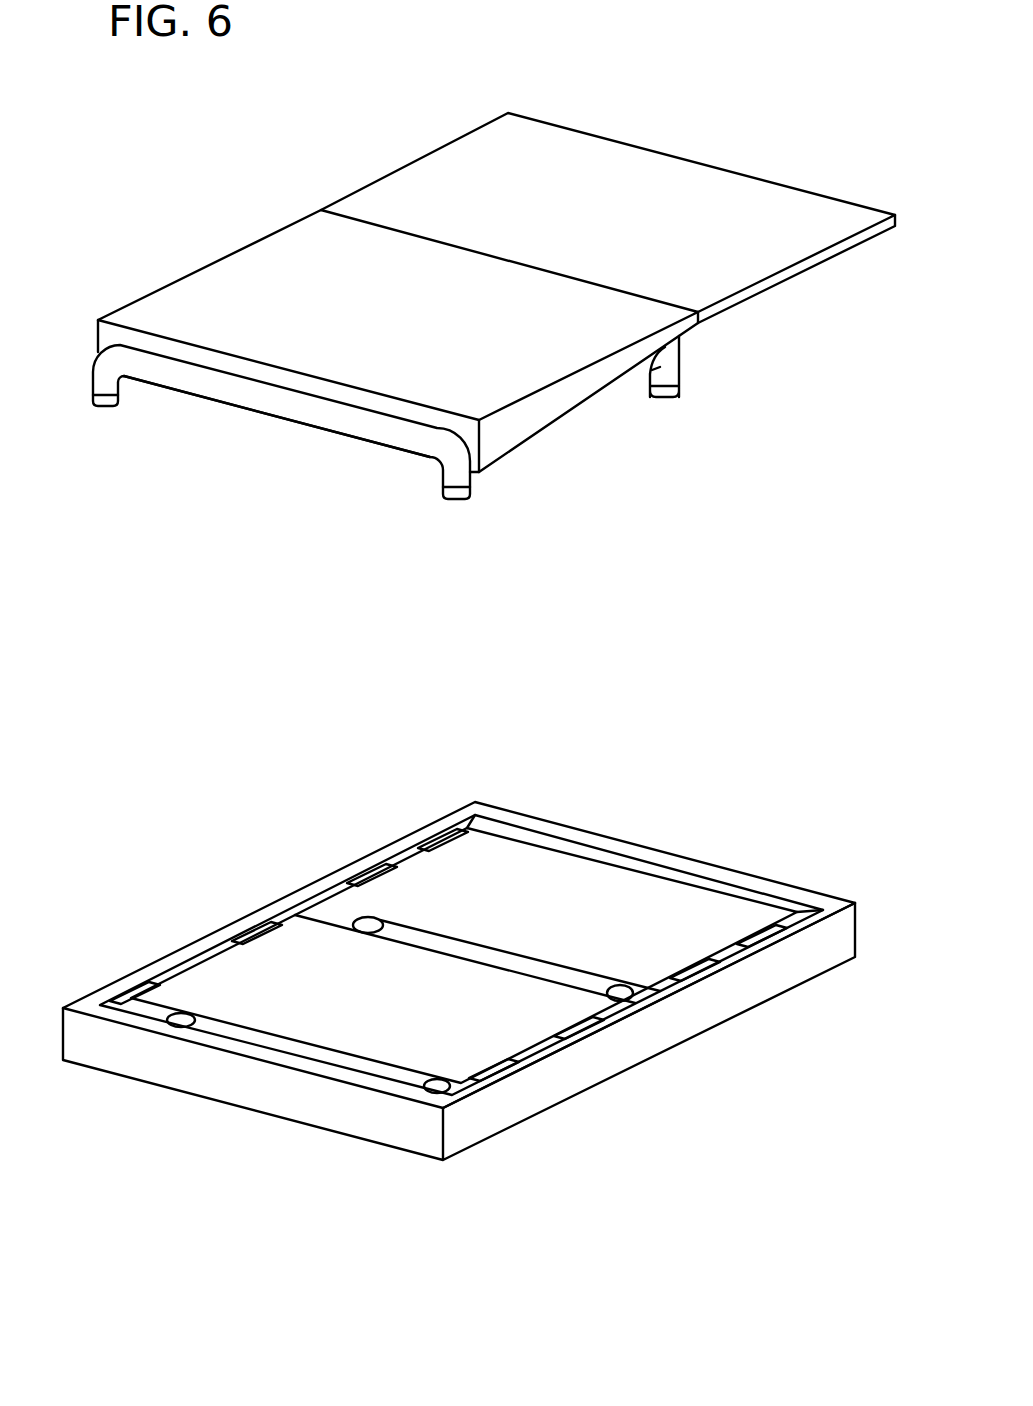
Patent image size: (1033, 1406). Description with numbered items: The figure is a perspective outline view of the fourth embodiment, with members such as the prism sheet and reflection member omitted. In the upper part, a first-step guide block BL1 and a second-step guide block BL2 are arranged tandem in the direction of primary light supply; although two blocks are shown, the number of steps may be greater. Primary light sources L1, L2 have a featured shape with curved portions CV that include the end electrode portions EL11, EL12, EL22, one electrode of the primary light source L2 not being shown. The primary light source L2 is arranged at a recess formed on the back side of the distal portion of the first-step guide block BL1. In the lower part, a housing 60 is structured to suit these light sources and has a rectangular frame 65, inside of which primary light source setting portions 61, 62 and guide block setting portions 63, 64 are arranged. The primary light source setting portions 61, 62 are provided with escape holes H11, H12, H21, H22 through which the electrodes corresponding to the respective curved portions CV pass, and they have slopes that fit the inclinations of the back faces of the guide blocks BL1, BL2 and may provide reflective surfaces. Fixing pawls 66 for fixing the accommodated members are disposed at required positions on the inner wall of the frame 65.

The first-step guide block BL1 is at (432, 329).
The second-step guide block BL2 is at (649, 231).
The curved portion CV is at (128, 393).
The primary light source L1 is at (300, 407).
The primary light source L2 is at (652, 372).
The electrode portion EL11 is at (101, 407).
The electrode portion EL12 is at (461, 500).
The electrode portion EL22 is at (668, 397).
The housing 60 is at (445, 1190).
The primary light source setting portion 61 is at (280, 1040).
The primary light source setting portion 62 is at (526, 962).
The guide block setting portion 63 is at (290, 963).
The guide block setting portion 64 is at (598, 887).
The rectangular frame 65 is at (488, 1130).
The fixing pawl 66 is at (243, 930).
The escape hole H11 is at (180, 1018).
The escape hole H12 is at (430, 1087).
The escape hole H21 is at (373, 916).
The escape hole H22 is at (620, 995).